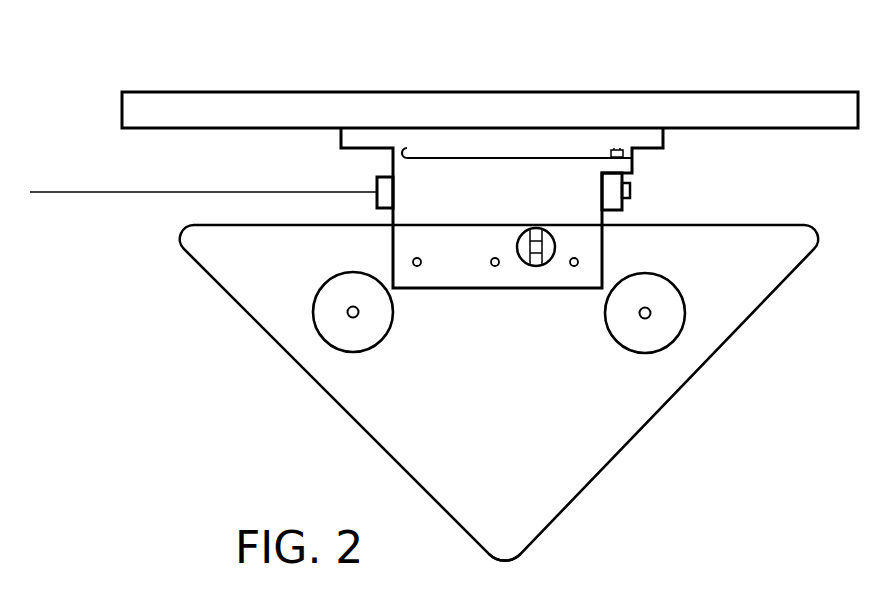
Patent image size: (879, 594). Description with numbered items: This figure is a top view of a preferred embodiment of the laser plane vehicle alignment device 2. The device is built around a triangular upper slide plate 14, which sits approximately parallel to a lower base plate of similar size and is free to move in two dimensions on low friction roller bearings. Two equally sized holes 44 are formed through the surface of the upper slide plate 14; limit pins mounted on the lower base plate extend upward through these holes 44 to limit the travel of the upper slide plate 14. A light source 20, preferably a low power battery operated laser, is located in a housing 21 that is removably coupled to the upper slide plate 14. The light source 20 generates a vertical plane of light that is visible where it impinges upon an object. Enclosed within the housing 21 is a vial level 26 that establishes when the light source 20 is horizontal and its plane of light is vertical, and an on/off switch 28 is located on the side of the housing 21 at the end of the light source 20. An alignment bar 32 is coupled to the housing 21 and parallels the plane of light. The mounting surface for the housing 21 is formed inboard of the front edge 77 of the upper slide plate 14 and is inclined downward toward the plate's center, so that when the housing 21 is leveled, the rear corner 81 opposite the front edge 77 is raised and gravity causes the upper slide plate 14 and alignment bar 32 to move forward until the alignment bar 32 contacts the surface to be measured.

The vehicle alignment device 2 is at (751, 385).
The upper slide plate 14 is at (499, 375).
The light source 20 is at (377, 184).
The housing 21 is at (474, 212).
The vial level 26 is at (551, 245).
The on/off switch 28 is at (630, 190).
The alignment bar 32 is at (742, 74).
The holes 44 is at (378, 337).
The front edge 77 is at (707, 224).
The rear corner 81 is at (507, 538).